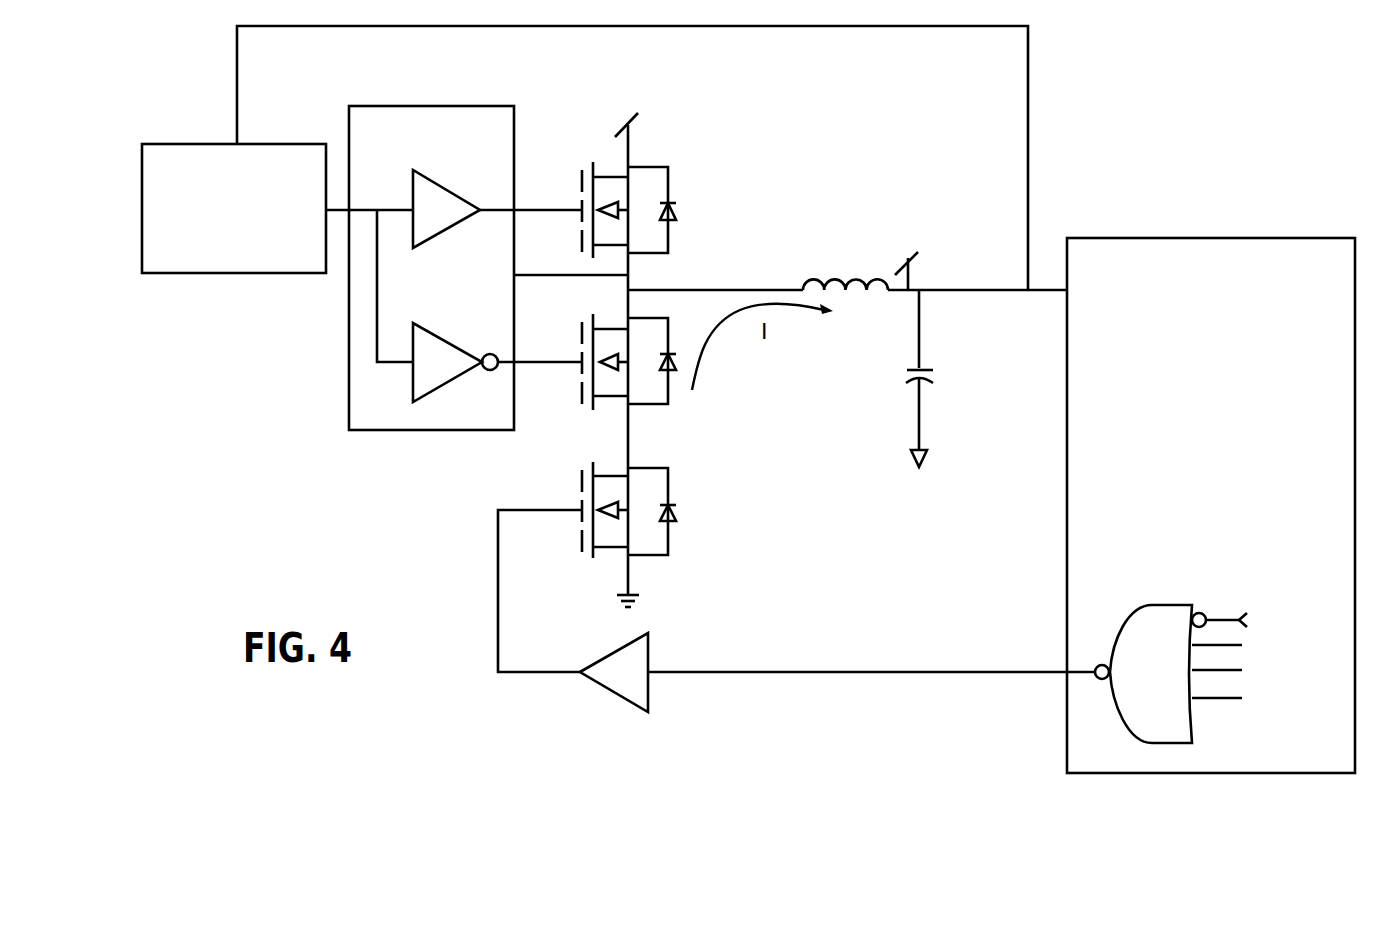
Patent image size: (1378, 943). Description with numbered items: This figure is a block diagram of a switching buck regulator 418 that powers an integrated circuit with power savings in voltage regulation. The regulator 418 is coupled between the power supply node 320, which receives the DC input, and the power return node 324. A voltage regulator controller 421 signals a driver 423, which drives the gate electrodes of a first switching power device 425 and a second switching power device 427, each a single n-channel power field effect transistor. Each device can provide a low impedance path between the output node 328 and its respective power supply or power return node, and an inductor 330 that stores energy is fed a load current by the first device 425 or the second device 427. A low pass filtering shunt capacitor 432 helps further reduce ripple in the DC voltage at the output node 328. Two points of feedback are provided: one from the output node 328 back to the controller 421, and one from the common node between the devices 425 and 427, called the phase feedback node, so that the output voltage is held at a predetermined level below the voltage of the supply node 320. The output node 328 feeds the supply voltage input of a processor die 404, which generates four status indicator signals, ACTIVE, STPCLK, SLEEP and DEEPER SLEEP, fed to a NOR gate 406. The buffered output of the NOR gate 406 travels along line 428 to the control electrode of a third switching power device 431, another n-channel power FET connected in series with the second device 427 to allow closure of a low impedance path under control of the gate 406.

The switching buck regulator 418 is at (211, 552).
The voltage regulator controller 421 is at (198, 272).
The driver 423 is at (298, 390).
The first switching power device 425 is at (690, 161).
The second switching power device 427 is at (691, 401).
The third switching power device 431 is at (691, 465).
The power supply node 320 is at (632, 138).
The power return node 324 is at (628, 575).
The inductor 330 is at (833, 268).
The output node 328 is at (1010, 293).
The low pass filtering shunt capacitor 432 is at (940, 378).
The processor die 404 is at (1175, 238).
The NOR gate 406 is at (1168, 689).
The control signal line with buffer 428 is at (808, 672).